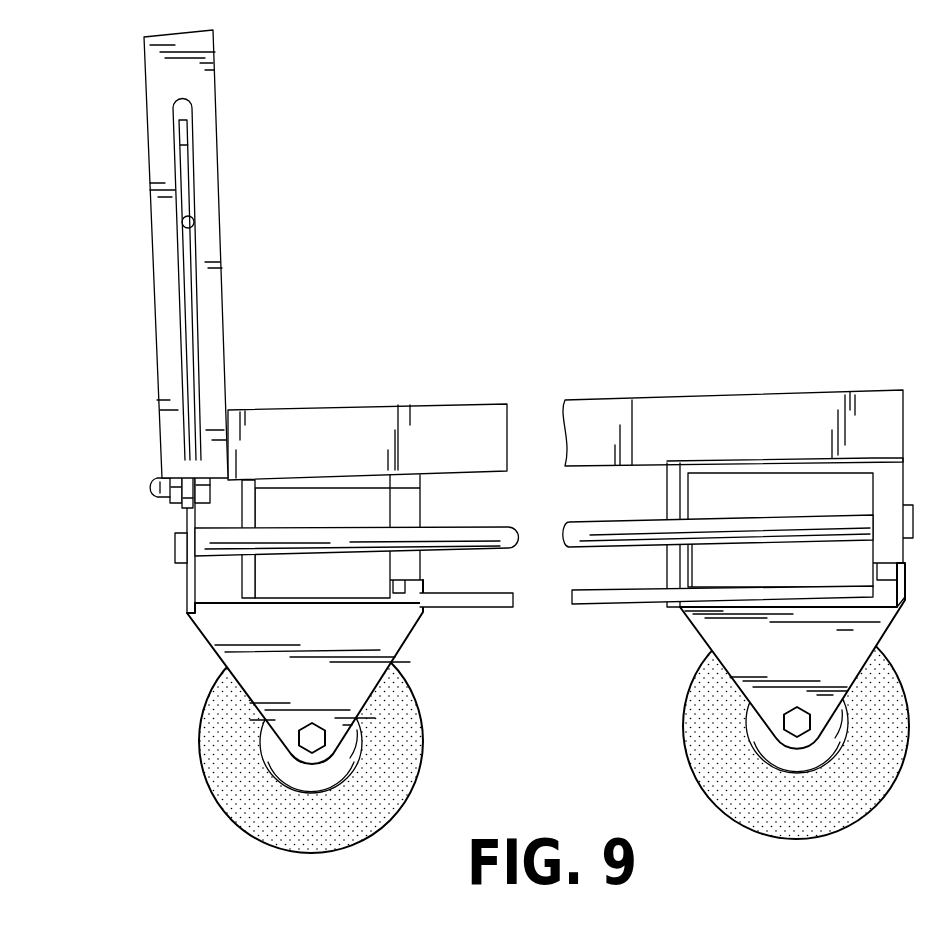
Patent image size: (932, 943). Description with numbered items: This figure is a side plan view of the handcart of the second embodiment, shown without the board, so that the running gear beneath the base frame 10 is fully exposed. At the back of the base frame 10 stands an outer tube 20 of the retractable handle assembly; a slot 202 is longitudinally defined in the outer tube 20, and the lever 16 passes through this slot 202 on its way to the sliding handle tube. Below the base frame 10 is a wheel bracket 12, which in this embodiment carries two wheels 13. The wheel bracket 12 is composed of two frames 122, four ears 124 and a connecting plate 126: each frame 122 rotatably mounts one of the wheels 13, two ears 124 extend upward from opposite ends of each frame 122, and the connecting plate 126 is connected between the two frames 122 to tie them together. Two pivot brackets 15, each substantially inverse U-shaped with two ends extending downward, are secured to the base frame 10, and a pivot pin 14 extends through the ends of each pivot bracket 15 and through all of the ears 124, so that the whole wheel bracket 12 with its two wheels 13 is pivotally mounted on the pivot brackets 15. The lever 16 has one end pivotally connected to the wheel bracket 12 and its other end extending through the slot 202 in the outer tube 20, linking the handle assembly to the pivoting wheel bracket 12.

The base frame 10 is at (715, 405).
The wheel bracket 12 is at (491, 623).
The wheel 13 is at (205, 753).
The pivot pin 14 is at (605, 527).
The pivot bracket 15 is at (247, 512).
The lever 16 is at (190, 325).
The outer tube 20 is at (198, 83).
The frame 122 is at (228, 622).
The ear 124 is at (190, 573).
The connecting plate 126 is at (632, 597).
The slot 202 is at (191, 228).